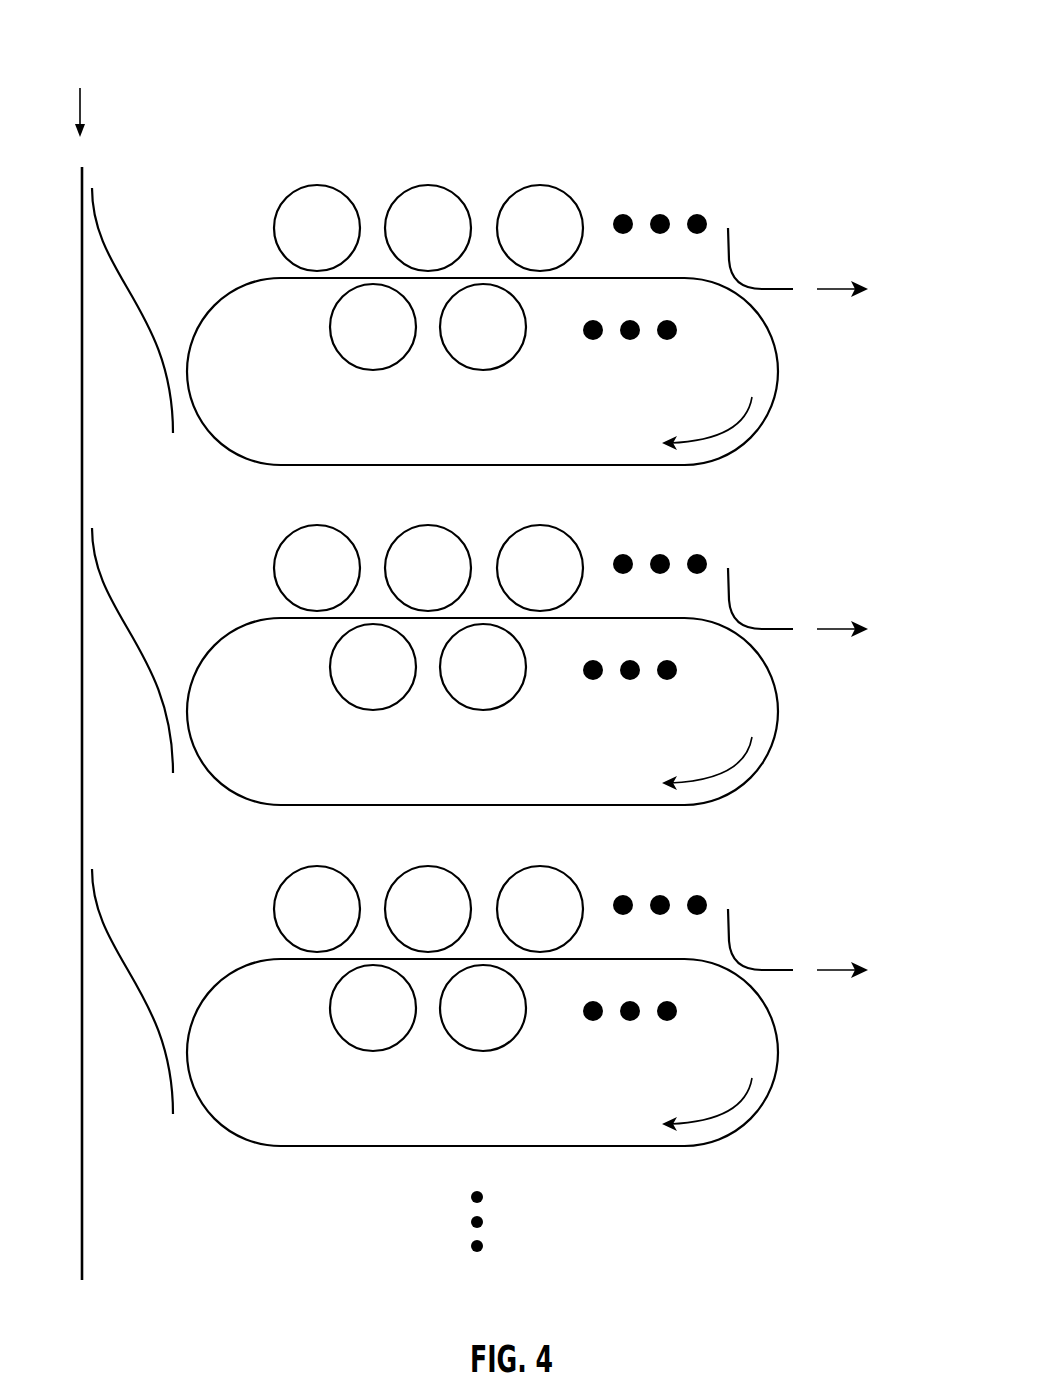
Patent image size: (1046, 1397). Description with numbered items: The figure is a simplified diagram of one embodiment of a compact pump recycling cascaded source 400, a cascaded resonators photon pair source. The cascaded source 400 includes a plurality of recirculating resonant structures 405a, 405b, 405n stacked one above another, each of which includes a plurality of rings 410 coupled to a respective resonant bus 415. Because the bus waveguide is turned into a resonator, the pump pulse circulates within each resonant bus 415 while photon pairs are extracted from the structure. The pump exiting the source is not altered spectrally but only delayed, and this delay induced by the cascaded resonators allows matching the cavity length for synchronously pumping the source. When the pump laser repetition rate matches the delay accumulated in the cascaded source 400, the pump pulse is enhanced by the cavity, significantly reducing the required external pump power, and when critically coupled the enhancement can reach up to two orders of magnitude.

The compact pump recycling cascaded source 400 is at (206, 31).
The recirculating resonant structure 405a is at (826, 155).
The recirculating resonant structure 405b is at (827, 549).
The recirculating resonant structure 405n is at (827, 872).
The rings 410 is at (563, 192).
The resonant bus 415 is at (779, 390).